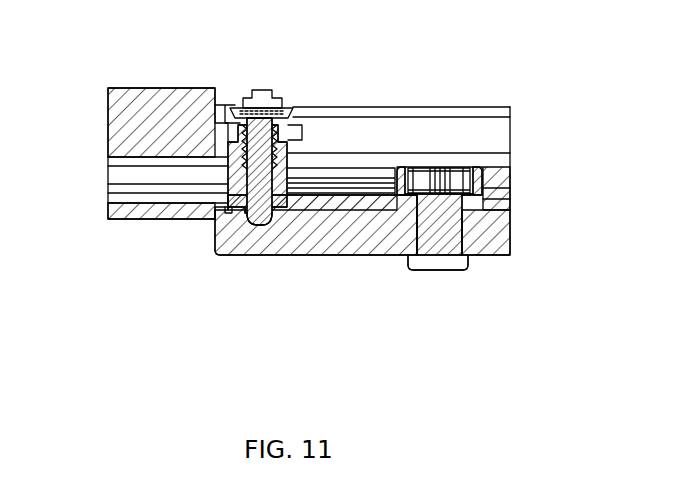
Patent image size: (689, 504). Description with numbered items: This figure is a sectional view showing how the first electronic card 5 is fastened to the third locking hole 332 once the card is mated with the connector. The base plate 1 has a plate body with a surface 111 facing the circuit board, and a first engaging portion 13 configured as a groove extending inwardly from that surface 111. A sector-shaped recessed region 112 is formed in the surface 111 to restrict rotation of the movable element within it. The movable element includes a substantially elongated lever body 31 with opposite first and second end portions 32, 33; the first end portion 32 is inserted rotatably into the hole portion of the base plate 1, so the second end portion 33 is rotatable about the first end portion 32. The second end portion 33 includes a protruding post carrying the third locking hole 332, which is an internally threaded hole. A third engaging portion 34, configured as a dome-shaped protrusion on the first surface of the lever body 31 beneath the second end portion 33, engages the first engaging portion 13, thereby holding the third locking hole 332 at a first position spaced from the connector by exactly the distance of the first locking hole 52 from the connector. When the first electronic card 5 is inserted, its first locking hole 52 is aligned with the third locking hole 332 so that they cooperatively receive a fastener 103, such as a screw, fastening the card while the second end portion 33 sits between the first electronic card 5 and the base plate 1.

The base plate 1 is at (390, 257).
The first electronic card 5 is at (182, 98).
The first engaging portion 13 is at (247, 213).
The lever body 31 is at (342, 202).
The first end portion 32 is at (465, 239).
The second end portion 33 is at (226, 175).
The third engaging portion 34 is at (263, 225).
The first locking hole 52 is at (277, 108).
The fastener 103 is at (292, 107).
The surface 111 is at (490, 208).
The recessed region 112 is at (215, 209).
The third locking hole 332 is at (263, 110).